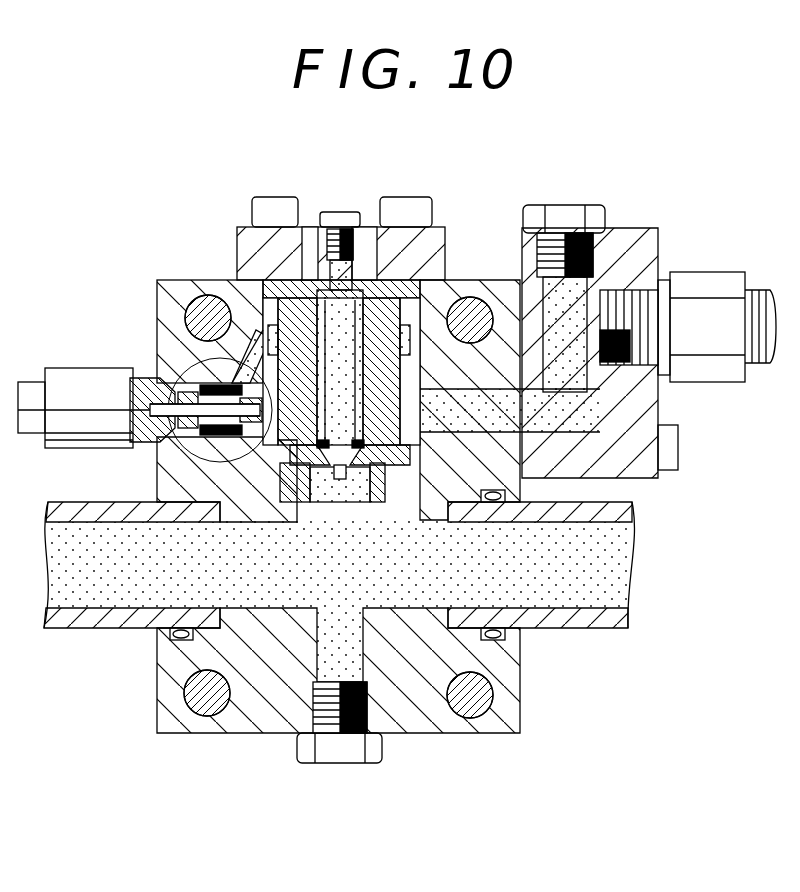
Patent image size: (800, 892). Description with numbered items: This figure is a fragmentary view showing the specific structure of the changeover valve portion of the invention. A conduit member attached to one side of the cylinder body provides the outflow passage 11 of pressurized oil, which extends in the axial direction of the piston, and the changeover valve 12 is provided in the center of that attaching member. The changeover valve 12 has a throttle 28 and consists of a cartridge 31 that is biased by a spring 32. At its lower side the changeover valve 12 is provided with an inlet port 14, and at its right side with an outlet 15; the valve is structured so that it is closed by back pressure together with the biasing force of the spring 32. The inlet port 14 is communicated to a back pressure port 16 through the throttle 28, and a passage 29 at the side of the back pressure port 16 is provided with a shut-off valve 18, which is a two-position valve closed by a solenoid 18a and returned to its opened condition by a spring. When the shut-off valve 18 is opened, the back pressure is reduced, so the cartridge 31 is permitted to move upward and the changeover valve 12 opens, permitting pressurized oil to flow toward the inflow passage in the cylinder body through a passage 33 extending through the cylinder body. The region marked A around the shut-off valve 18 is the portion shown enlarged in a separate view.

The outflow passage 11 is at (88, 598).
The changeover valve 12 is at (307, 461).
The inlet port 14 is at (350, 480).
The outlet 15 is at (390, 443).
The back pressure port 16 is at (312, 290).
The shut-off valve 18 is at (143, 372).
The solenoid 18a is at (97, 378).
The throttle 28 is at (337, 480).
The passage 29 is at (255, 343).
The cartridge 31 is at (420, 343).
The spring 32 is at (372, 290).
The passage 33 is at (470, 405).
The detail portion A is at (185, 368).